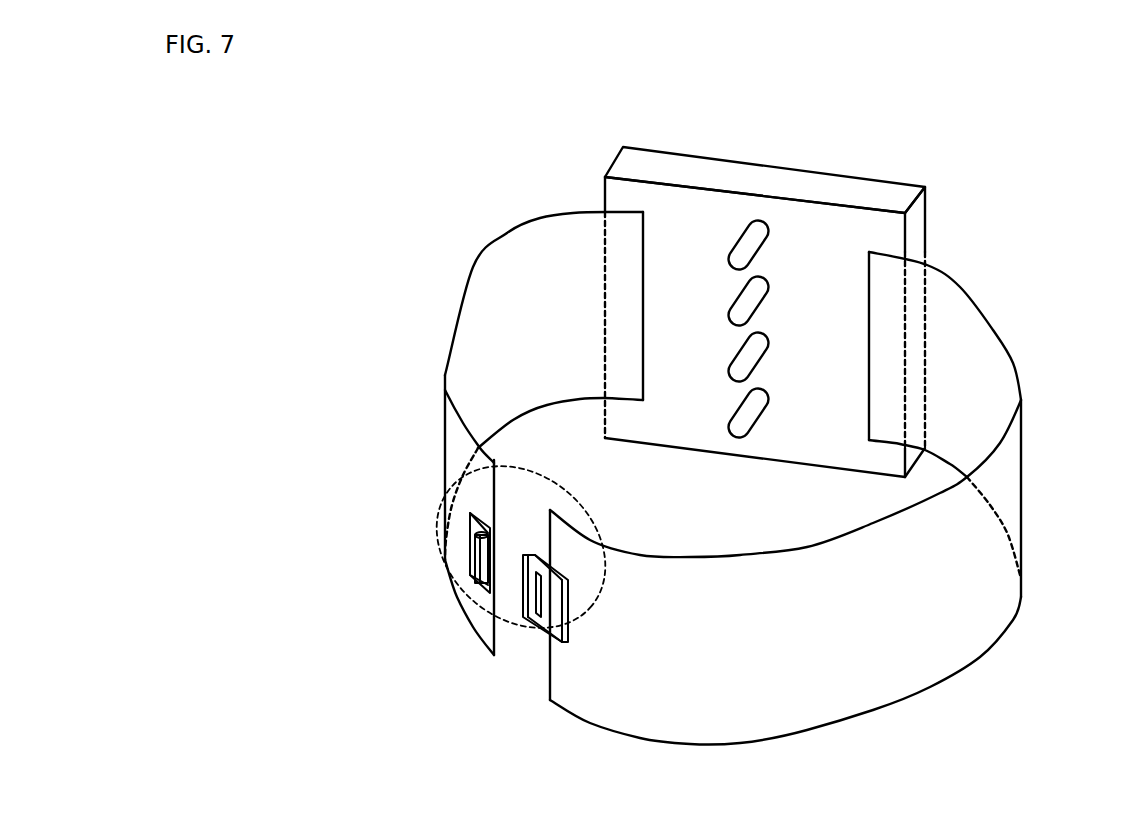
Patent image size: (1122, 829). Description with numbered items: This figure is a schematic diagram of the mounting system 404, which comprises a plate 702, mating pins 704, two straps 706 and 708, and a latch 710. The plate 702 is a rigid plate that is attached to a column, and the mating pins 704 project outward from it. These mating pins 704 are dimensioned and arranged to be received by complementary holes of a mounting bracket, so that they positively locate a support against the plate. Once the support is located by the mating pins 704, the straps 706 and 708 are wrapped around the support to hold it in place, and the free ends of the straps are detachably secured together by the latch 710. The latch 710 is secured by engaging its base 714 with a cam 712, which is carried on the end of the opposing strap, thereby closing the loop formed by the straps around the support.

The mounting system 404 is at (378, 171).
The plate 702 is at (858, 180).
The mating pins 704 is at (757, 345).
The strap 706 is at (980, 307).
The strap 708 is at (445, 323).
The latch 710 is at (537, 637).
The cam 712 is at (490, 518).
The base 714 is at (563, 625).